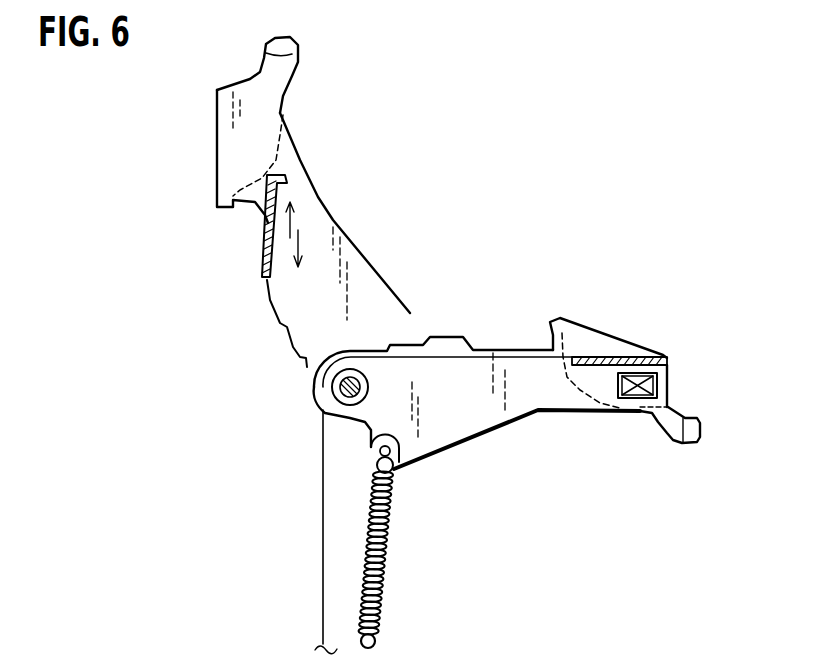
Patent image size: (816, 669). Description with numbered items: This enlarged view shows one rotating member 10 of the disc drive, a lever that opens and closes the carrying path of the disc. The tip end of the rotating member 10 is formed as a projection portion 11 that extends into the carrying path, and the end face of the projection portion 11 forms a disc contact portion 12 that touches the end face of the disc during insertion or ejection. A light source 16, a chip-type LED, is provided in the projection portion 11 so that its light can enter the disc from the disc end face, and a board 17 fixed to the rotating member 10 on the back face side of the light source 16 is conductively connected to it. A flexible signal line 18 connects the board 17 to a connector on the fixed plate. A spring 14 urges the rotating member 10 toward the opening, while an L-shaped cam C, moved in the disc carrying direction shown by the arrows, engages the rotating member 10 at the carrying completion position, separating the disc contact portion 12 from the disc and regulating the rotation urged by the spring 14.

The rotating member 10 is at (335, 208).
The projection portion 11 is at (295, 145).
The disc contact portion 12 is at (285, 110).
The spring 14 is at (385, 593).
The light source 16 is at (658, 383).
The board 17 is at (615, 353).
The signal line 18 is at (323, 574).
The cam C is at (263, 255).